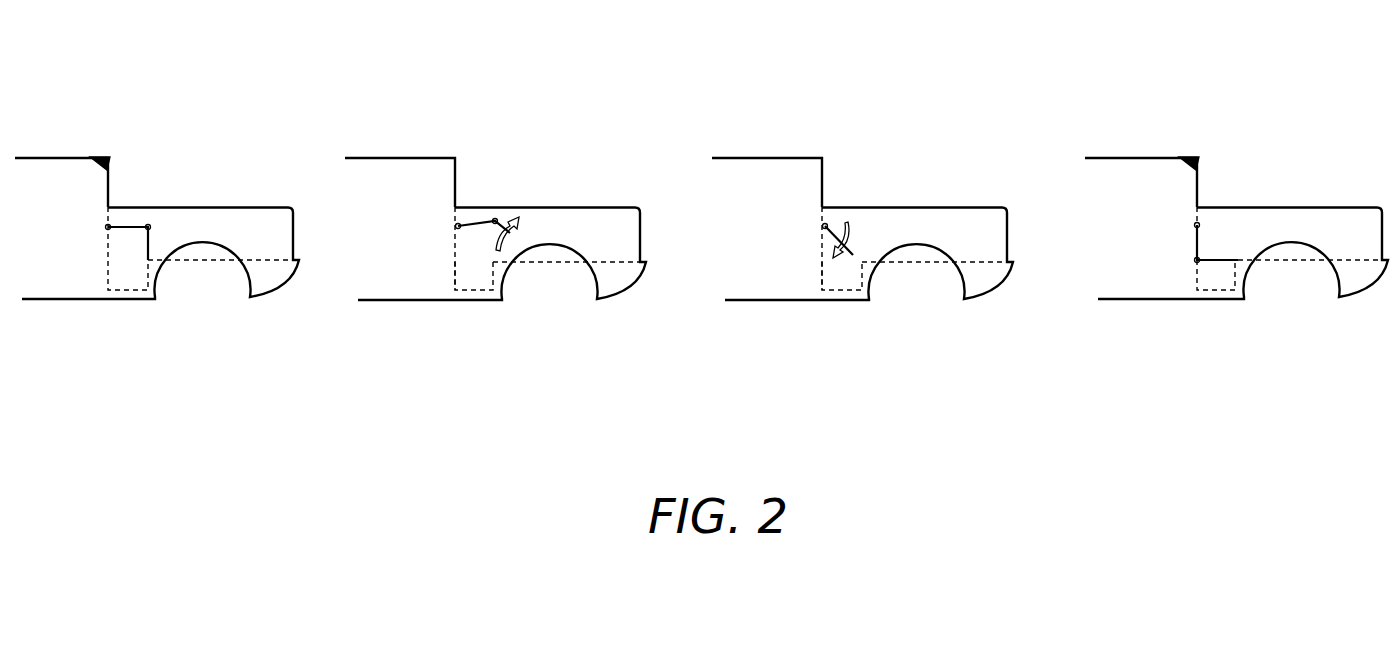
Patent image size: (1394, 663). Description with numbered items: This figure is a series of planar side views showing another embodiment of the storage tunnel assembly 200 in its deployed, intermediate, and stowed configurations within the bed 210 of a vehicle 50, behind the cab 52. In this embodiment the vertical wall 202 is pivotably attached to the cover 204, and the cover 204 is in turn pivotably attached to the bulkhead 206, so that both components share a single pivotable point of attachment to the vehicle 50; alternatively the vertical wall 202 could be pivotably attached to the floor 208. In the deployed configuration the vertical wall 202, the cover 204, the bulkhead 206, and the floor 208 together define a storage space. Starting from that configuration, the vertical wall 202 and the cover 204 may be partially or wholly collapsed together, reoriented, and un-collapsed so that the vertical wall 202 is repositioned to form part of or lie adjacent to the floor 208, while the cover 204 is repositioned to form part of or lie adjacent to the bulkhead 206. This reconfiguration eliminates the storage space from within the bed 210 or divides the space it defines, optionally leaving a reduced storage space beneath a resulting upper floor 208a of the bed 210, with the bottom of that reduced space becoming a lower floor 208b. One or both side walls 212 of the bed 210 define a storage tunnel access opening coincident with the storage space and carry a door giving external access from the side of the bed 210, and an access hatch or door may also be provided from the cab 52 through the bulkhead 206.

The vehicle 50 is at (74, 118).
The cab 52 is at (108, 160).
The storage tunnel assembly 200 is at (142, 198).
The vertical wall 202 is at (517, 245).
The cover 204 is at (474, 221).
The bulkhead 206 is at (455, 267).
The floor 208 is at (125, 285).
The upper floor 208a is at (1212, 267).
The lower floor 208b is at (1223, 292).
The bed 210 is at (257, 179).
The side walls 212 is at (623, 215).